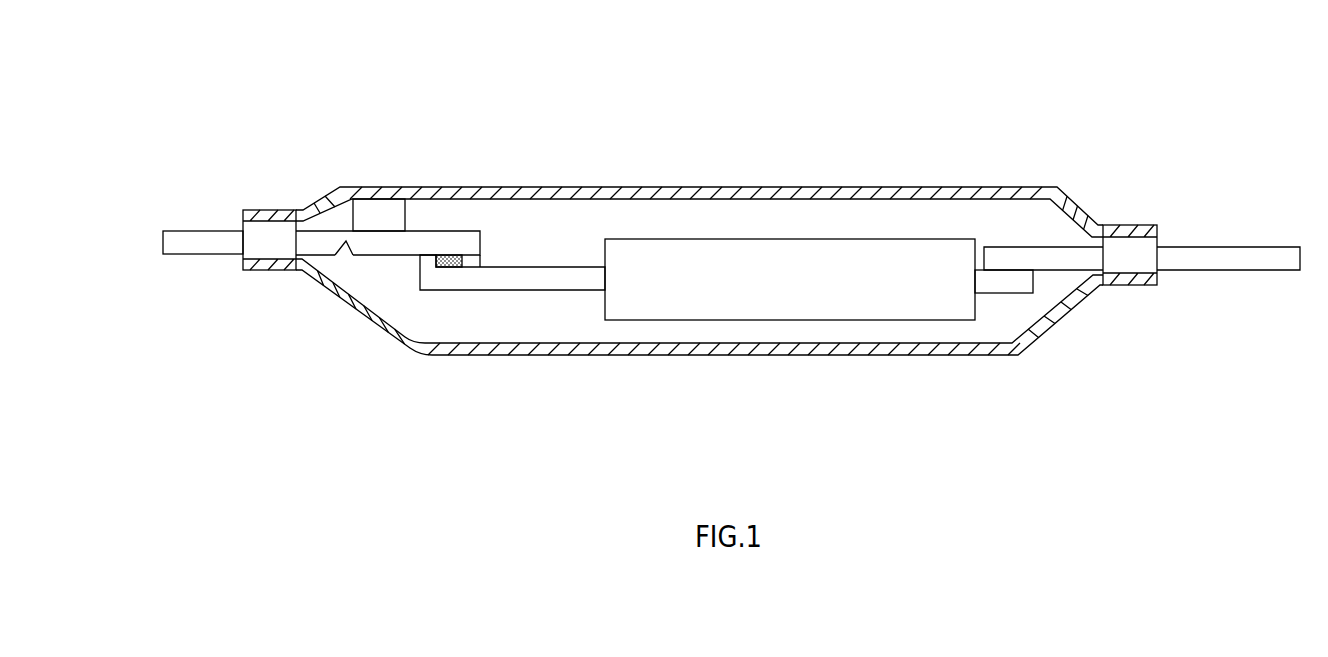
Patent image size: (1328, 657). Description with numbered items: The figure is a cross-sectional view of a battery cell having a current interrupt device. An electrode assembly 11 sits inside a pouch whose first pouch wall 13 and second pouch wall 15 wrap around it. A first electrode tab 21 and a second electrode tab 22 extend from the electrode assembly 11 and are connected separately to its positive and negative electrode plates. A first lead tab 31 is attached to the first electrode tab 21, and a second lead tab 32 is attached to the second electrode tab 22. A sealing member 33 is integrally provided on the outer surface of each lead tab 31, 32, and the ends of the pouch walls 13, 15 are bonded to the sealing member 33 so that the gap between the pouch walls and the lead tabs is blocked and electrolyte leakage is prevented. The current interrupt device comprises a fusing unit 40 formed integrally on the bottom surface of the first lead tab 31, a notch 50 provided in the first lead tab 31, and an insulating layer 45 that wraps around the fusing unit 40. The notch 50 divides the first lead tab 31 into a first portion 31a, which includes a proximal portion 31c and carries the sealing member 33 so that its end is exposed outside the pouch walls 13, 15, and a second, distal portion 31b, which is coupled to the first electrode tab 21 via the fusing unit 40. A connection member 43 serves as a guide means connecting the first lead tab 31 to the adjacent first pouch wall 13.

The electrode assembly 11 is at (790, 255).
The first pouch wall 13 is at (634, 197).
The second pouch wall 15 is at (595, 352).
The first electrode tab 21 is at (466, 280).
The second electrode tab 22 is at (1008, 283).
The first lead tab 31 is at (276, 209).
The first portion 31a is at (185, 231).
The second portion 31b is at (391, 310).
The proximal portion 31c is at (318, 243).
The second lead tab 32 is at (1228, 257).
The sealing member 33 is at (267, 232).
The fusing unit 40 is at (439, 196).
The connection member 43 is at (378, 208).
The insulating layer 45 is at (473, 262).
The notch 50 is at (337, 258).